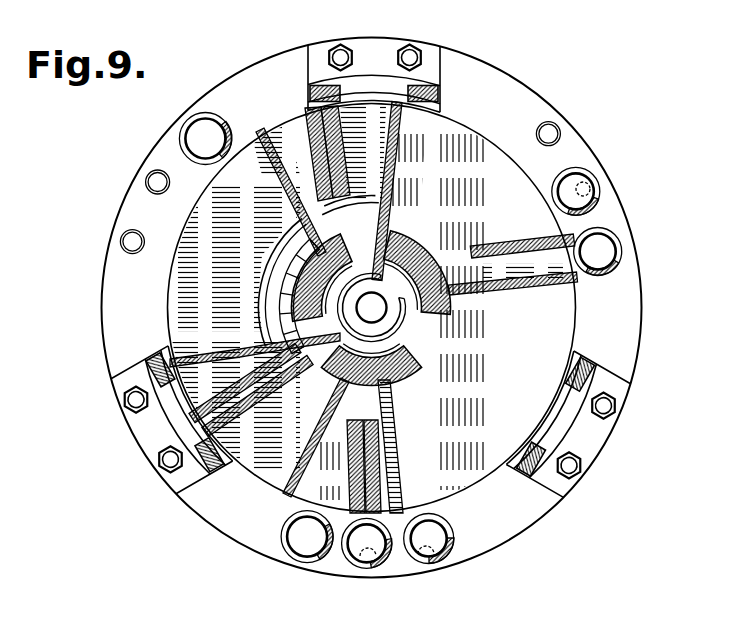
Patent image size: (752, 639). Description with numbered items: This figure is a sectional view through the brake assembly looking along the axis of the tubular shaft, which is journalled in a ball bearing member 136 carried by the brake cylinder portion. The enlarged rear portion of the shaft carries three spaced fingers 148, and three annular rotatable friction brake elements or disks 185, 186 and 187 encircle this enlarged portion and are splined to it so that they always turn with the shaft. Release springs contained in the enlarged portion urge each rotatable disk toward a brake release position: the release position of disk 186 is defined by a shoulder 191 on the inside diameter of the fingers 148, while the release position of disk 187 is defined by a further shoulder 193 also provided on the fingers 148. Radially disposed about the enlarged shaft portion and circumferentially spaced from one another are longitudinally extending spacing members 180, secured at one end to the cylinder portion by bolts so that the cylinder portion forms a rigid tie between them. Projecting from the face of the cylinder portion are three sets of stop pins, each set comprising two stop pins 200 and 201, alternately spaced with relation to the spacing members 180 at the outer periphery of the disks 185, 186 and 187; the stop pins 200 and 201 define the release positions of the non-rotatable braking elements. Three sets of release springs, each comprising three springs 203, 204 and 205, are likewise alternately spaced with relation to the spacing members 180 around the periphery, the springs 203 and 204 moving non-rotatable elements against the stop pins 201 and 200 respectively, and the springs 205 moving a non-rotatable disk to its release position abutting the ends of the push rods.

The ball bearing member 136 is at (273, 287).
The fingers 148 is at (417, 238).
The spacing members 180 is at (426, 60).
The rotatable friction brake element or disk 185 is at (281, 126).
The rotatable friction brake element or disk 186 is at (365, 110).
The rotatable friction brake element or disk 187 is at (451, 137).
The shoulder 191 is at (399, 277).
The shoulder 193 is at (428, 320).
The stop pins 200 is at (146, 178).
The stop pins 201 is at (121, 235).
The release springs 203 is at (298, 558).
The release springs 204 is at (613, 259).
The release springs 205 is at (193, 120).